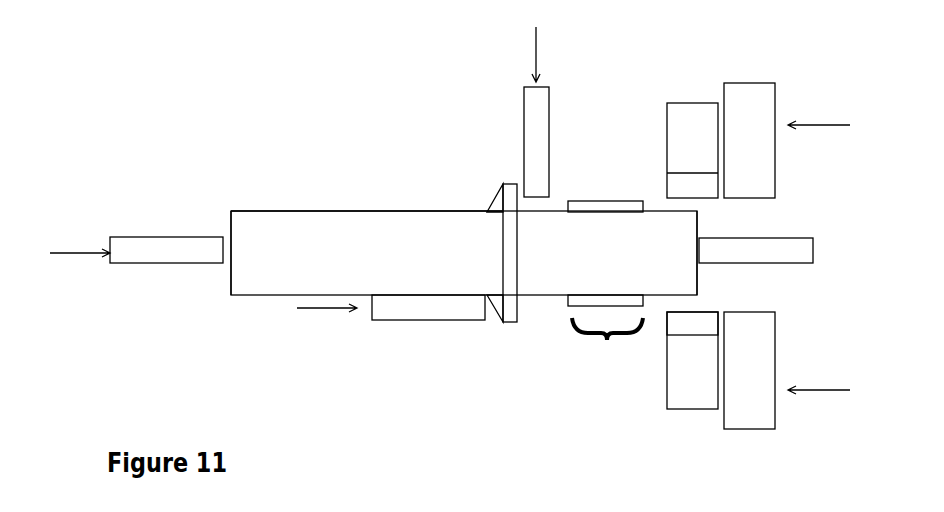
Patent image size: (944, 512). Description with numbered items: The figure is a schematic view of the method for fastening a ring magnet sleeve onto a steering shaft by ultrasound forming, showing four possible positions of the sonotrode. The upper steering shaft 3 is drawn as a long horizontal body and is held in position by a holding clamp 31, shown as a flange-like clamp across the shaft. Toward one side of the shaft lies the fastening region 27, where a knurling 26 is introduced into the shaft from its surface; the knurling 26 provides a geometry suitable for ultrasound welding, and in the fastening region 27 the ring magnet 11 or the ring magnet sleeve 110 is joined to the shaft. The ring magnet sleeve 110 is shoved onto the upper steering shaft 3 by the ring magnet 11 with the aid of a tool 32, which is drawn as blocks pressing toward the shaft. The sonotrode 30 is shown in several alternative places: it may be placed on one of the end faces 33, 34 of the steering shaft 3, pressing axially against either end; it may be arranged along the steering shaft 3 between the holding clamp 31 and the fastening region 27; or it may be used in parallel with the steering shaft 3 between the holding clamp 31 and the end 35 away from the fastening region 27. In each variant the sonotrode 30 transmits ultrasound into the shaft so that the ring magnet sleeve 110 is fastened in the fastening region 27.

The upper steering shaft 3 is at (306, 251).
The ring magnet 11 is at (677, 380).
The ring magnet sleeve 110 is at (686, 322).
The knurling 26 is at (598, 207).
The fastening region 27 is at (607, 342).
The sonotrode 30 is at (153, 262).
The holding clamp 31 is at (503, 190).
The tool 32 is at (758, 110).
The end face 33 is at (230, 228).
The end face 34 is at (699, 275).
The end away from the fastening region 35 is at (271, 210).